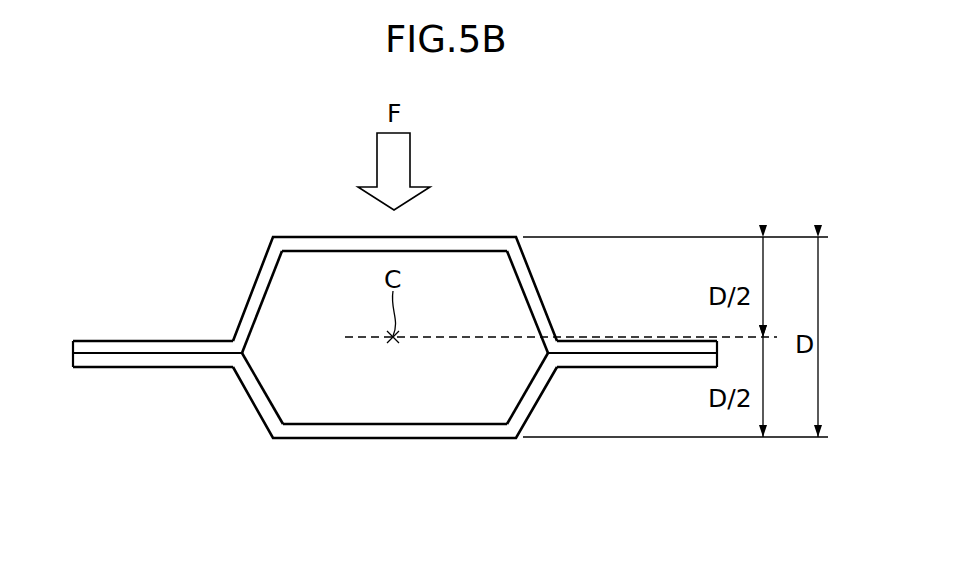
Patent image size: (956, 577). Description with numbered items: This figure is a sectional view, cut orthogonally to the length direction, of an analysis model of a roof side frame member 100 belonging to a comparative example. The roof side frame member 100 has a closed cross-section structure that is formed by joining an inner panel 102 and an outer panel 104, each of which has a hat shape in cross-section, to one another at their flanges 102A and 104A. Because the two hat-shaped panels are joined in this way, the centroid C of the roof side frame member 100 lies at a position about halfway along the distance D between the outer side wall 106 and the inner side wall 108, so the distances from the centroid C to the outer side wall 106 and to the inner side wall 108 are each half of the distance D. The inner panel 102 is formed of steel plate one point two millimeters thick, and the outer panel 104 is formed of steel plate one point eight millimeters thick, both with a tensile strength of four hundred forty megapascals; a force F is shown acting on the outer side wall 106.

The roof side frame member 100 is at (395, 328).
The inner panel 102 is at (286, 443).
The outer panel 104 is at (257, 255).
The outer side wall 106 is at (327, 247).
The inner side wall 108 is at (385, 434).
The flange 102A is at (153, 365).
The flange 104A is at (153, 343).